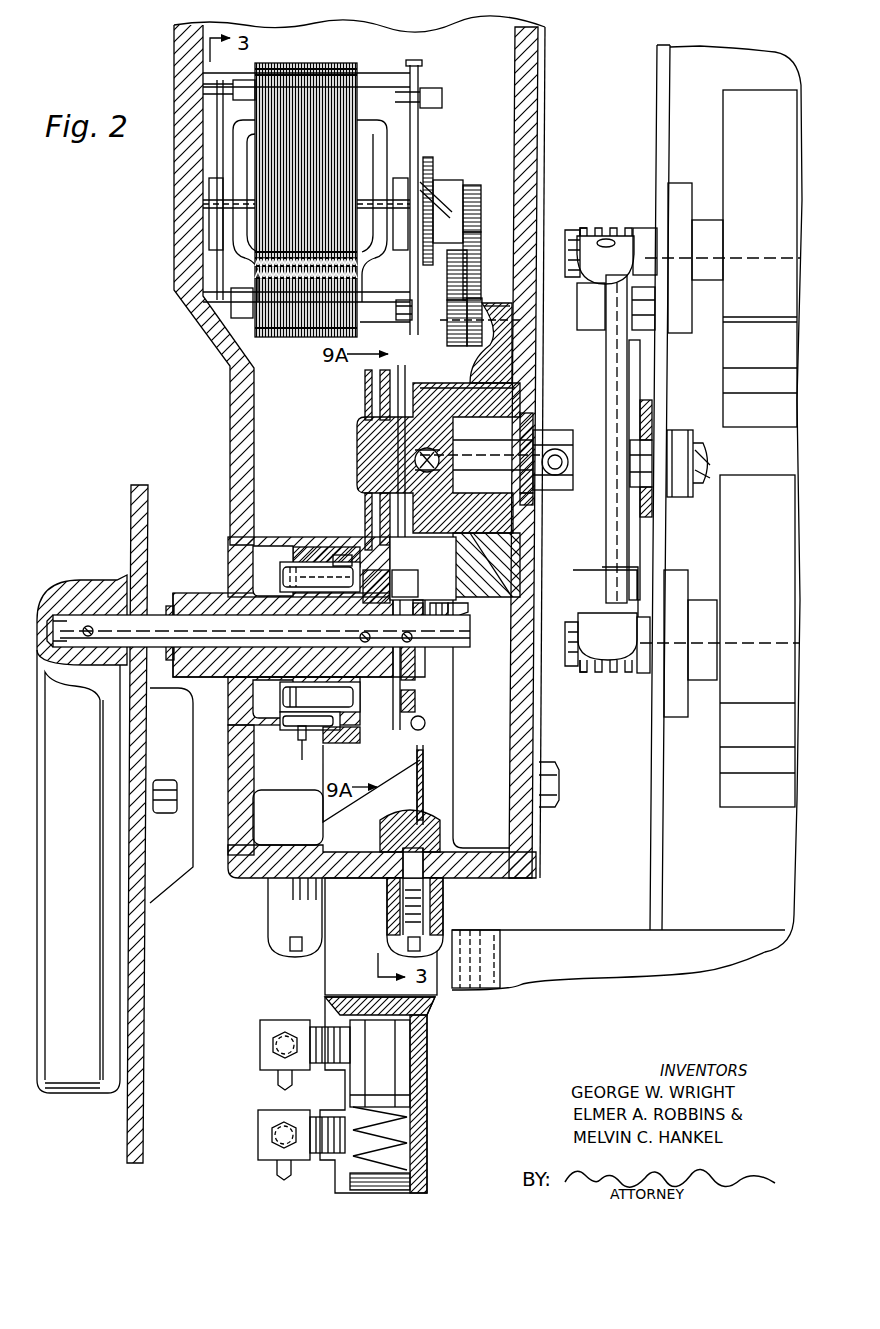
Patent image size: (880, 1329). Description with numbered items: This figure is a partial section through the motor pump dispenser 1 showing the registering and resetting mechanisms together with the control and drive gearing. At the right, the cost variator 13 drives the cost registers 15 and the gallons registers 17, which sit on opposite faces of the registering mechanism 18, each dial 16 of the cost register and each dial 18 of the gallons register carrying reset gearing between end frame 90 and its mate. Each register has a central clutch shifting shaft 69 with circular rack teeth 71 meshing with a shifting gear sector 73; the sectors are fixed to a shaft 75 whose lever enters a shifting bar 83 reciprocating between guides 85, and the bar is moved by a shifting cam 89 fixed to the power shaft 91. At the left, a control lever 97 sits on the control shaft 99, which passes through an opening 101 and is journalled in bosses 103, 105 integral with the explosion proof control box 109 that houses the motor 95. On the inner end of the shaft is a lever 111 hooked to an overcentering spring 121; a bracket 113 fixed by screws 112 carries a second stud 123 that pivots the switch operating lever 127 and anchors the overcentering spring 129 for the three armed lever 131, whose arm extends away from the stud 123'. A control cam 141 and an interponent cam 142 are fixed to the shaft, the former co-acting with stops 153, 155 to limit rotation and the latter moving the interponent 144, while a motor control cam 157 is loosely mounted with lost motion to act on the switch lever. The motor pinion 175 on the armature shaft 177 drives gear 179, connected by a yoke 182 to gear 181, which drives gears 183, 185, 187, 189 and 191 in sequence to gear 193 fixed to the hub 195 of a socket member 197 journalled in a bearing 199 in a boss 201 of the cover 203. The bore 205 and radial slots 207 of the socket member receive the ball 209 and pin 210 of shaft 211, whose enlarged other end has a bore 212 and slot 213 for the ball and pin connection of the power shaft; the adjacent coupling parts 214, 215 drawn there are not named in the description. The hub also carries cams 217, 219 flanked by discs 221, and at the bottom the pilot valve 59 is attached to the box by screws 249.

The motor pump dispenser 1 is at (110, 1123).
The speed or cost variator 13 is at (552, 972).
The cost registers 15 is at (720, 86).
The dial 16 is at (730, 118).
The gallons registers 17 is at (716, 773).
The registering mechanism 18 is at (722, 722).
The pilot valve 59 is at (430, 1057).
The clutch shifting shaft 69 is at (652, 231).
The circular rack teeth 71 is at (623, 228).
The shifting gear sector 73 is at (604, 273).
The shaft 75 is at (600, 345).
The shifting bar 83 is at (652, 428).
The guides 85 is at (652, 400).
The shifting cam 89 is at (613, 383).
The side frame 90 is at (662, 858).
The power shaft 91 is at (698, 452).
The motor 95 is at (295, 105).
The control lever 97 is at (70, 593).
The control shaft 99 is at (112, 620).
The opening 101 is at (150, 698).
The boss 103 is at (187, 593).
The boss 105 is at (312, 562).
The explosion proof control box 109 is at (190, 178).
The lever 111 is at (462, 623).
The screws 112 is at (360, 780).
The bracket 113 is at (337, 810).
The spring 121 is at (452, 604).
The second stud 123 is at (453, 728).
The stud 123' is at (299, 731).
The switch operating lever 127 is at (416, 695).
The overcentering spring 129 is at (302, 740).
The three armed lever 131 is at (340, 556).
The control cam 141 is at (312, 596).
The interponent cam 142 is at (390, 588).
The interponent 144 is at (400, 568).
The stop 153 is at (287, 694).
The stop 155 is at (305, 560).
The motor control cam 157 is at (419, 675).
The pinion 175 is at (444, 192).
The armature shaft 177 is at (372, 153).
The gear 179 is at (428, 158).
The gear 181 is at (468, 192).
The yoke 182 is at (458, 205).
The gear 183 is at (455, 256).
The gear 185 is at (455, 270).
The gear 187 is at (506, 352).
The gear 189 is at (483, 307).
The gear 191 is at (390, 337).
The gear 193 is at (405, 543).
The hub 195 is at (380, 428).
The socket member 197 is at (505, 385).
The bearing 199 is at (508, 550).
The boss 201 is at (515, 575).
The cover 203 is at (528, 74).
The bore 205 is at (493, 485).
The radial slots 207 is at (493, 437).
The ball 209 is at (418, 470).
The pin 210 is at (418, 458).
The shaft 211 is at (480, 455).
The bore 212 is at (530, 505).
The slot 213 is at (560, 425).
The ball joint 214 is at (563, 440).
The spring 215 is at (535, 490).
The cam 217 is at (380, 402).
The cam 219 is at (365, 383).
The disc 221 is at (365, 509).
The screws 249 is at (392, 940).